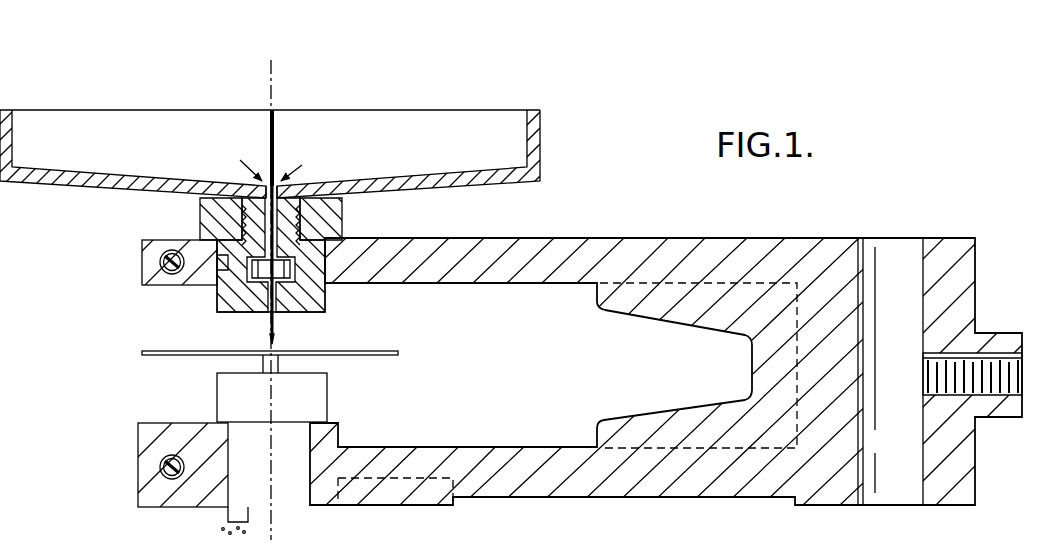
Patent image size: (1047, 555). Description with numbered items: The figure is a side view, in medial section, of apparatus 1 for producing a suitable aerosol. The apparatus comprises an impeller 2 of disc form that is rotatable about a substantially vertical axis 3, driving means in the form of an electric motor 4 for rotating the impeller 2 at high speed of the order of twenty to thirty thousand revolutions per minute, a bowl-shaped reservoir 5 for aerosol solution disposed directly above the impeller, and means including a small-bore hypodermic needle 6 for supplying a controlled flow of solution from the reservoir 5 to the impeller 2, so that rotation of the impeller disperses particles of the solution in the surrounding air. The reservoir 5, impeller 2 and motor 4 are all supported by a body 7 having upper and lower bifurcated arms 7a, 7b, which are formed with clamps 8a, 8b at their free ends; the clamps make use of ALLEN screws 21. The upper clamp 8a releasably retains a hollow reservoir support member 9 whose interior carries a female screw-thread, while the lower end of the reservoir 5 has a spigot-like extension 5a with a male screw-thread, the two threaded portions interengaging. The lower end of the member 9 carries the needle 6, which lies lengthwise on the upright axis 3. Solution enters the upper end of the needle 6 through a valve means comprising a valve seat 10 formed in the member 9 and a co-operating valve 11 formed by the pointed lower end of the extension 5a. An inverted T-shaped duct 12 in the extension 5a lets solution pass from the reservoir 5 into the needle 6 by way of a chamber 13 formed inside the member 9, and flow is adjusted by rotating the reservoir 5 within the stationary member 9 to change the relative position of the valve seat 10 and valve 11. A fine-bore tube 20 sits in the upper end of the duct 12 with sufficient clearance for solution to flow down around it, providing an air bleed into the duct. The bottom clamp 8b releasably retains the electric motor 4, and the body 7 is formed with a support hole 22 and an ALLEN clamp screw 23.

The apparatus 1 is at (556, 168).
The impeller 2 is at (150, 358).
The axis 3 is at (274, 84).
The electric motor 4 is at (328, 400).
The reservoir 5 is at (512, 108).
The spigot-like extension 5a is at (250, 207).
The hypodermic needle 6 is at (266, 330).
The body 7 is at (668, 351).
The upper bifurcated arm 7a is at (596, 230).
The lower bifurcated arm 7b is at (502, 434).
The clamp 8a is at (142, 275).
The clamp 8b is at (140, 440).
The reservoir support member 9 is at (327, 316).
The valve seat 10 is at (327, 298).
The valve 11 is at (258, 268).
The duct 12 is at (300, 212).
The chamber 13 is at (226, 268).
The fine-bore tube 20 is at (278, 140).
The ALLEN screws 21 is at (164, 262).
The support hole 22 is at (886, 257).
The ALLEN clamp screw 23 is at (960, 365).